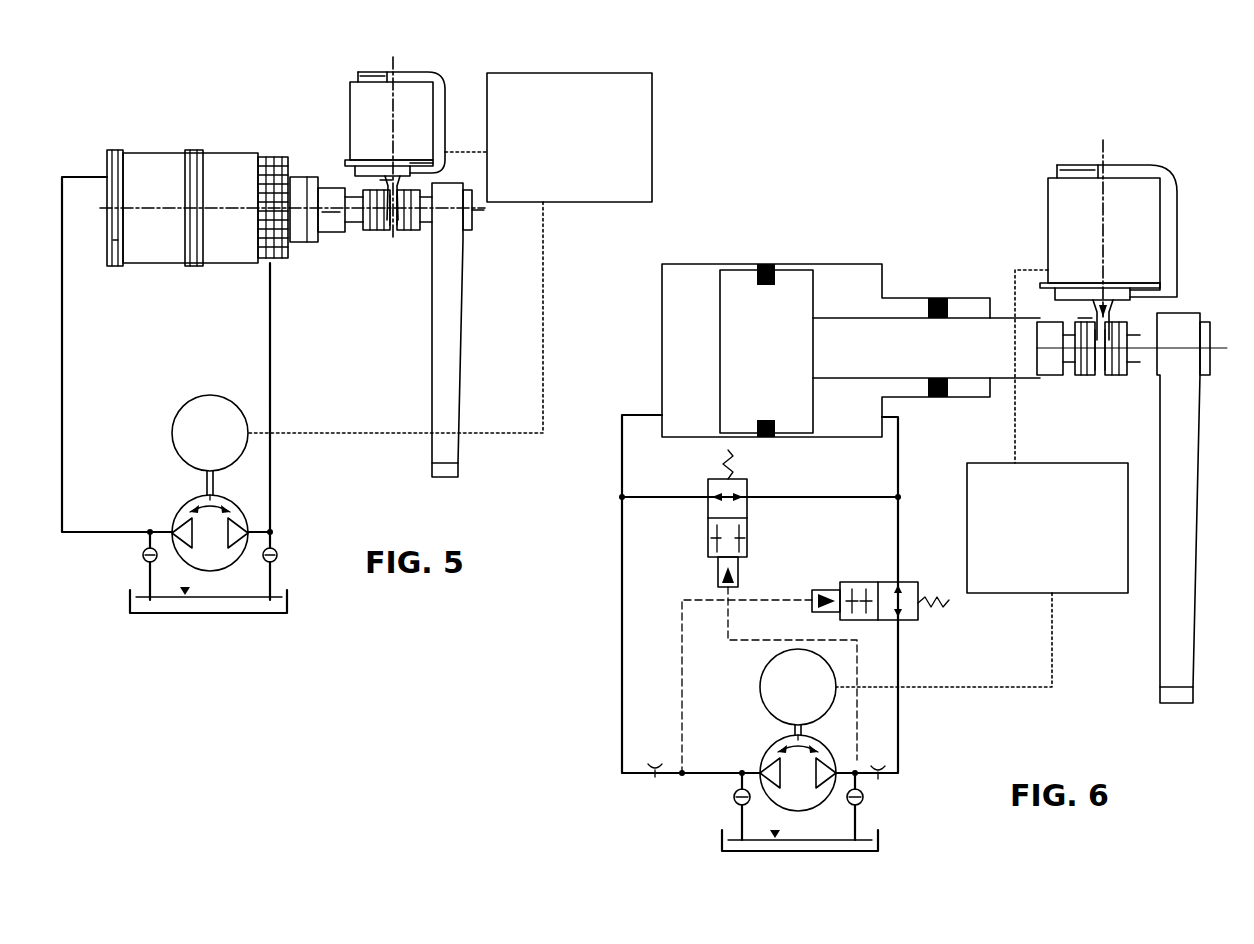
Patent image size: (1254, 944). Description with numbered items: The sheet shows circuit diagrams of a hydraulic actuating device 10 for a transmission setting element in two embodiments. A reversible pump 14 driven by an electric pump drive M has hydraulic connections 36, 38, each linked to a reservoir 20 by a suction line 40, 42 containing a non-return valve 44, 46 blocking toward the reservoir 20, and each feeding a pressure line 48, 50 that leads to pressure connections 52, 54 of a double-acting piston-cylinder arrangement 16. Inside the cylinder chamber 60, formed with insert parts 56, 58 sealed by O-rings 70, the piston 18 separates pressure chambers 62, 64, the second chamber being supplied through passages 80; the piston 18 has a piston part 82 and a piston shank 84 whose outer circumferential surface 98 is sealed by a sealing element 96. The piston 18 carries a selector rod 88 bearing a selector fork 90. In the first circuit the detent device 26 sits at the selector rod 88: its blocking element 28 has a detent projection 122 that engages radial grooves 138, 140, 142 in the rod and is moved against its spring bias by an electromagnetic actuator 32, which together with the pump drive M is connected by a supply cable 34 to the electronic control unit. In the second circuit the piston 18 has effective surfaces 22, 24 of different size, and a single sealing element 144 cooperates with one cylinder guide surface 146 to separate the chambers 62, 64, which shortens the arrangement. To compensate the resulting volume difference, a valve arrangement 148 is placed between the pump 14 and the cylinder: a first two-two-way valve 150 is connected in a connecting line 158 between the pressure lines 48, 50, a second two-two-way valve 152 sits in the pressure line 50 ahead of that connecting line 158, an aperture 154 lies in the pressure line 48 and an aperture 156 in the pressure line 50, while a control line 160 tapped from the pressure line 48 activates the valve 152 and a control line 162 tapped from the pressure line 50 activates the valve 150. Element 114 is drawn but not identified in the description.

In FIG. 5, the hydraulic actuating device 10 is at (78, 142).
In FIG. 6, the hydraulic actuating device 10 is at (931, 252).
In FIG. 5, the pump 14 is at (185, 515).
In FIG. 6, the pump 14 is at (775, 755).
In FIG. 5, the piston-cylinder arrangement 16 is at (225, 150).
In FIG. 6, the piston-cylinder arrangement 16 is at (824, 265).
In FIG. 6, the piston 18 is at (745, 362).
In FIG. 5, the reservoir 20 is at (206, 613).
In FIG. 6, the reservoir 20 is at (830, 851).
In FIG. 6, the effective surface 22 is at (720, 305).
In FIG. 6, the effective surface 24 is at (813, 395).
In FIG. 5, the detent device 26 is at (410, 68).
In FIG. 6, the detent device 26 is at (1128, 166).
In FIG. 5, the blocking element 28 is at (378, 180).
In FIG. 6, the blocking element 28 is at (1075, 318).
In FIG. 5, the actuator 32 is at (381, 130).
In FIG. 6, the actuator 32 is at (1091, 240).
In FIG. 5, the supply cable 34 is at (468, 152).
In FIG. 6, the supply cable 34 is at (1013, 443).
In FIG. 5, the hydraulic connection 36 is at (172, 532).
In FIG. 6, the hydraulic connection 36 is at (760, 773).
In FIG. 5, the hydraulic connection 38 is at (250, 533).
In FIG. 6, the hydraulic connection 38 is at (838, 771).
In FIG. 5, the suction line 40 is at (145, 584).
In FIG. 6, the suction line 40 is at (740, 822).
In FIG. 5, the suction line 42 is at (272, 580).
In FIG. 6, the suction line 42 is at (857, 820).
In FIG. 5, the non-return valve 44 is at (143, 557).
In FIG. 6, the non-return valve 44 is at (748, 812).
In FIG. 5, the non-return valve 46 is at (277, 558).
In FIG. 6, the non-return valve 46 is at (850, 810).
In FIG. 5, the pressure line 48 is at (62, 478).
In FIG. 6, the pressure line 48 is at (620, 720).
In FIG. 5, the pressure line 50 is at (270, 420).
In FIG. 6, the pressure line 50 is at (898, 700).
In FIG. 5, the pressure connection 52 is at (107, 180).
In FIG. 6, the pressure connection 52 is at (662, 410).
In FIG. 5, the pressure connection 54 is at (272, 265).
In FIG. 6, the pressure connection 54 is at (898, 420).
In FIG. 5, the insert part 56 is at (138, 193).
In FIG. 5, the insert part 58 is at (216, 199).
In FIG. 6, the cylinder chamber 60 is at (757, 272).
In FIG. 6, the pressure chamber 62 is at (676, 362).
In FIG. 6, the pressure chamber 64 is at (833, 305).
In FIG. 5, the O-rings 70 is at (258, 220).
In FIG. 5, the passages 80 is at (275, 157).
In FIG. 6, the piston part 82 is at (788, 414).
In FIG. 5, the piston shank 84 is at (330, 215).
In FIG. 6, the piston shank 84 is at (956, 370).
In FIG. 5, the selector rod 88 is at (353, 203).
In FIG. 6, the selector rod 88 is at (1050, 365).
In FIG. 5, the selector fork 90 is at (455, 305).
In FIG. 6, the selector fork 90 is at (1168, 415).
In FIG. 6, the sealing element 96 is at (955, 308).
In FIG. 6, the outer circumferential surface 98 is at (893, 306).
In FIG. 5, the sensor mount 114 is at (378, 72).
In FIG. 6, the sensor mount 114 is at (1076, 172).
In FIG. 5, the detent projection 122 is at (389, 177).
In FIG. 6, the detent projection 122 is at (1100, 298).
In FIG. 5, the radial groove 138 is at (368, 233).
In FIG. 6, the radial groove 138 is at (1077, 377).
In FIG. 5, the radial groove 140 is at (393, 225).
In FIG. 6, the radial groove 140 is at (1103, 372).
In FIG. 5, the radial groove 142 is at (415, 232).
In FIG. 6, the radial groove 142 is at (1135, 376).
In FIG. 6, the sealing element 144 is at (778, 272).
In FIG. 6, the cylinder guide surface 146 is at (720, 432).
In FIG. 6, the valve arrangement 148 is at (793, 572).
In FIG. 6, the 2-2-way valve 150 is at (710, 534).
In FIG. 6, the 2-2-way valve 152 is at (912, 587).
In FIG. 6, the aperture 154 is at (655, 778).
In FIG. 6, the aperture 156 is at (880, 778).
In FIG. 6, the connecting line 158 is at (640, 495).
In FIG. 6, the control line 160 is at (682, 668).
In FIG. 6, the control line 162 is at (795, 640).